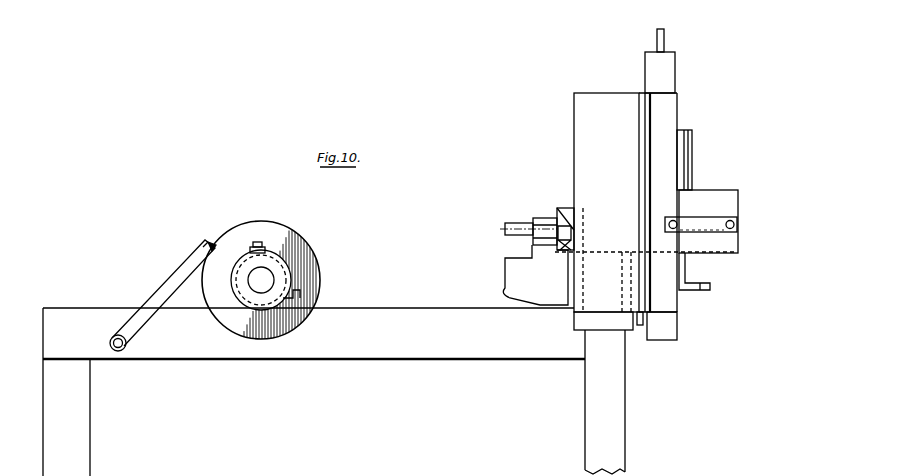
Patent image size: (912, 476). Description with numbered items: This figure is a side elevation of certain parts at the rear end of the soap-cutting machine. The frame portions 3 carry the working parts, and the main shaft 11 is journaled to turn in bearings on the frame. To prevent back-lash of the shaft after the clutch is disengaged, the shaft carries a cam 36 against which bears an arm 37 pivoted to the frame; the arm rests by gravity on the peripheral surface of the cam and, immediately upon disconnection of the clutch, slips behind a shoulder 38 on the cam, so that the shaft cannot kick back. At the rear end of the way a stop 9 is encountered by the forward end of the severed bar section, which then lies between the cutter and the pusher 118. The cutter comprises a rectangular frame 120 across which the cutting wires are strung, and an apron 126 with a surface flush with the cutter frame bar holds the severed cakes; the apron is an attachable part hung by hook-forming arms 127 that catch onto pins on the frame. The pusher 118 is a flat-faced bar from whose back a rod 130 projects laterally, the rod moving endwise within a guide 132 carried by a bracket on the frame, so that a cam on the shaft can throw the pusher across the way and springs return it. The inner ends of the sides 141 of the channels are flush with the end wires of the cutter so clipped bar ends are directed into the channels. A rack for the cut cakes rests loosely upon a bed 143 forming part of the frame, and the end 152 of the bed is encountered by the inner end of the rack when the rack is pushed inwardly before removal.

The frame portions 3 is at (314, 392).
The stop 9 is at (646, 283).
The main shaft 11 is at (257, 290).
The cam 36 is at (320, 285).
The arm 37 is at (181, 276).
The shoulder 38 is at (213, 237).
The pusher 118 is at (565, 208).
The rectangular frame 120 is at (675, 55).
The apron 126 is at (738, 196).
The hook-forming arms 127 is at (699, 222).
The rod 130 is at (505, 231).
The guide 132 is at (543, 218).
The sides of the channels 141 is at (694, 167).
The bed 143 is at (698, 288).
The end of the bed 152 is at (686, 274).